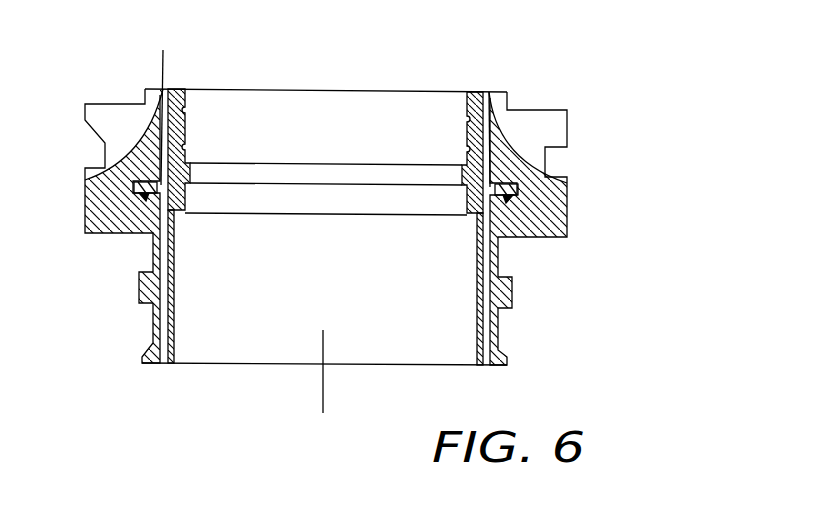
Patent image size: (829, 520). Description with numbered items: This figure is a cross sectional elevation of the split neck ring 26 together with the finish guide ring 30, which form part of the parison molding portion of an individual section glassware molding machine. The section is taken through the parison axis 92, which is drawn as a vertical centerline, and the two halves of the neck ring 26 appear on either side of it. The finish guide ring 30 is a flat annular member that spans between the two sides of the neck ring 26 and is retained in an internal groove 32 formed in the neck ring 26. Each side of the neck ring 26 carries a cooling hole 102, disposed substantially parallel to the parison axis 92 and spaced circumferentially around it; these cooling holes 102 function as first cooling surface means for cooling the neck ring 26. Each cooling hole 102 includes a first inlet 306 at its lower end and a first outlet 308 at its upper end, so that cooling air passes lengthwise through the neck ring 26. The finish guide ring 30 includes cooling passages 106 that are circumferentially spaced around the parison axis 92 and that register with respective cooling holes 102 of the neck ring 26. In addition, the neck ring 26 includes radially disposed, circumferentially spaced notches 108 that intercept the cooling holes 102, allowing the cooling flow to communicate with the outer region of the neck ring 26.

The split neck ring 26 is at (528, 87).
The first outlet 308 is at (163, 50).
The first inlet 306 is at (166, 365).
The notches 108 is at (523, 123).
The cooling holes 102 is at (487, 316).
The finish guide ring 30 is at (275, 213).
The internal groove 32 is at (157, 193).
The cooling passages 106 is at (472, 195).
The parison axis 92 is at (325, 392).